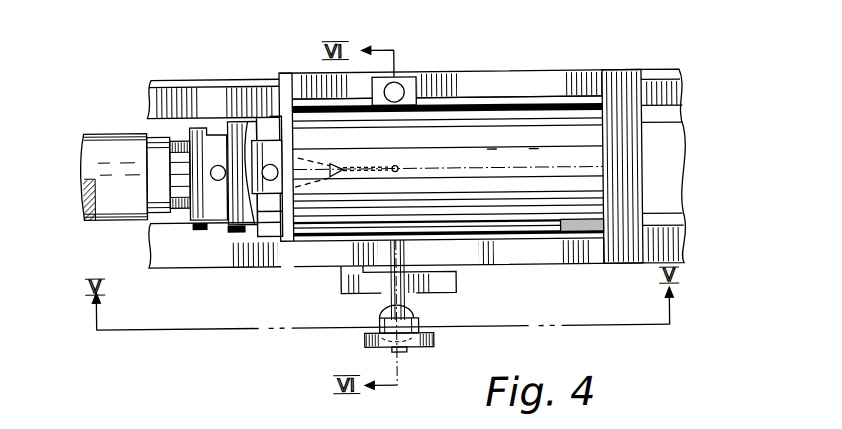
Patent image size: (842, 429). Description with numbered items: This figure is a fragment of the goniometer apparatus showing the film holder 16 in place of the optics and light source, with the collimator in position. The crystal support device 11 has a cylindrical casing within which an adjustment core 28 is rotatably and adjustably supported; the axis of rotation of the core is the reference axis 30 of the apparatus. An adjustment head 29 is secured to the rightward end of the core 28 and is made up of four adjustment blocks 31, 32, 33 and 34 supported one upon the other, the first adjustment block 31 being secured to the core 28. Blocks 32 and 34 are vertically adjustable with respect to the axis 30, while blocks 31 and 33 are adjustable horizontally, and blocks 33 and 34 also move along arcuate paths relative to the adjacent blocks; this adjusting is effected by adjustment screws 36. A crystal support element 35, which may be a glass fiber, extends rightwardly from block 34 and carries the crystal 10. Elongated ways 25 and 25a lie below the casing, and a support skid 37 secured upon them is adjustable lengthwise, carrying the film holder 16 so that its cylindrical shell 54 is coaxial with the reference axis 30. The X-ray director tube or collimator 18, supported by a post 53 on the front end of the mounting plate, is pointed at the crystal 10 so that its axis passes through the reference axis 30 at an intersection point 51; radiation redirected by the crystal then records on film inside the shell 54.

The crystal 10 is at (401, 162).
The crystal support device 11 is at (97, 125).
The film holder 16 is at (559, 100).
The X-ray director tube or collimator 18 is at (405, 259).
The elongated way 25 is at (681, 122).
The elongated way 25a is at (688, 255).
The adjustment core 28 is at (158, 222).
The adjustment head 29 is at (214, 124).
The reference axis 30 is at (433, 168).
The first adjustment block 31 is at (219, 203).
The adjustment block 32 is at (231, 118).
The adjustment block 33 is at (272, 193).
The adjustment block 34 is at (287, 232).
The crystal support element 35 is at (379, 171).
The adjustment screws 36 is at (289, 166).
The support skid 37 is at (628, 117).
The intersection point 51 is at (389, 163).
The post 53 is at (420, 323).
The cylindrical shell 54 is at (513, 149).